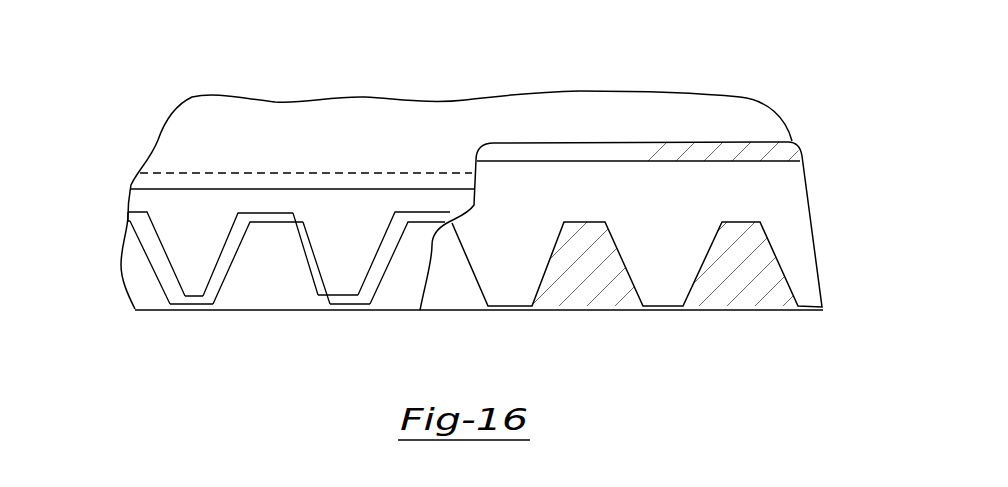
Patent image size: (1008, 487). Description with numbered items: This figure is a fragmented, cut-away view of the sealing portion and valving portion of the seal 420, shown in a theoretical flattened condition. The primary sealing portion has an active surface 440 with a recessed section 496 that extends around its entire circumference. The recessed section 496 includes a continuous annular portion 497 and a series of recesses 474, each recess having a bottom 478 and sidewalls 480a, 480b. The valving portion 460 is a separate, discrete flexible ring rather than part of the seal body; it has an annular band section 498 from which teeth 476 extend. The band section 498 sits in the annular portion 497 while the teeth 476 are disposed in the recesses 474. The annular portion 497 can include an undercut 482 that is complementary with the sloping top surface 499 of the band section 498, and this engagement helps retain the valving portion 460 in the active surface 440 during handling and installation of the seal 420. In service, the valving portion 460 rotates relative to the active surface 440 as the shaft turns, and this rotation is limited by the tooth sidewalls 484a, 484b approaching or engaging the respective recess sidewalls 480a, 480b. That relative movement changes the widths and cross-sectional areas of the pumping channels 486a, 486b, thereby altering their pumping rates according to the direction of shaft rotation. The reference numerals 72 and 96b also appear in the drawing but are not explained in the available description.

The seal 420 is at (588, 72).
The active surface 440 is at (140, 292).
The valving portion 460 is at (153, 198).
The sloping top surface 499 is at (447, 172).
The band section 498 is at (142, 202).
The sidewall 480a is at (234, 262).
The sidewall 480b is at (155, 256).
The bottom of corrugation 96b is at (203, 262).
The pumping channel 486a is at (380, 263).
The pumping channel 486b is at (312, 240).
The sidewall 484a is at (374, 279).
The sidewall 484b is at (324, 277).
The teeth 476 is at (355, 248).
The wall thickness 72 is at (288, 272).
The undercut 482 is at (522, 162).
The continuous annular portion 497 is at (748, 177).
The recessed section 496 is at (785, 192).
The bottom 478 is at (677, 306).
The recesses 474 is at (662, 295).